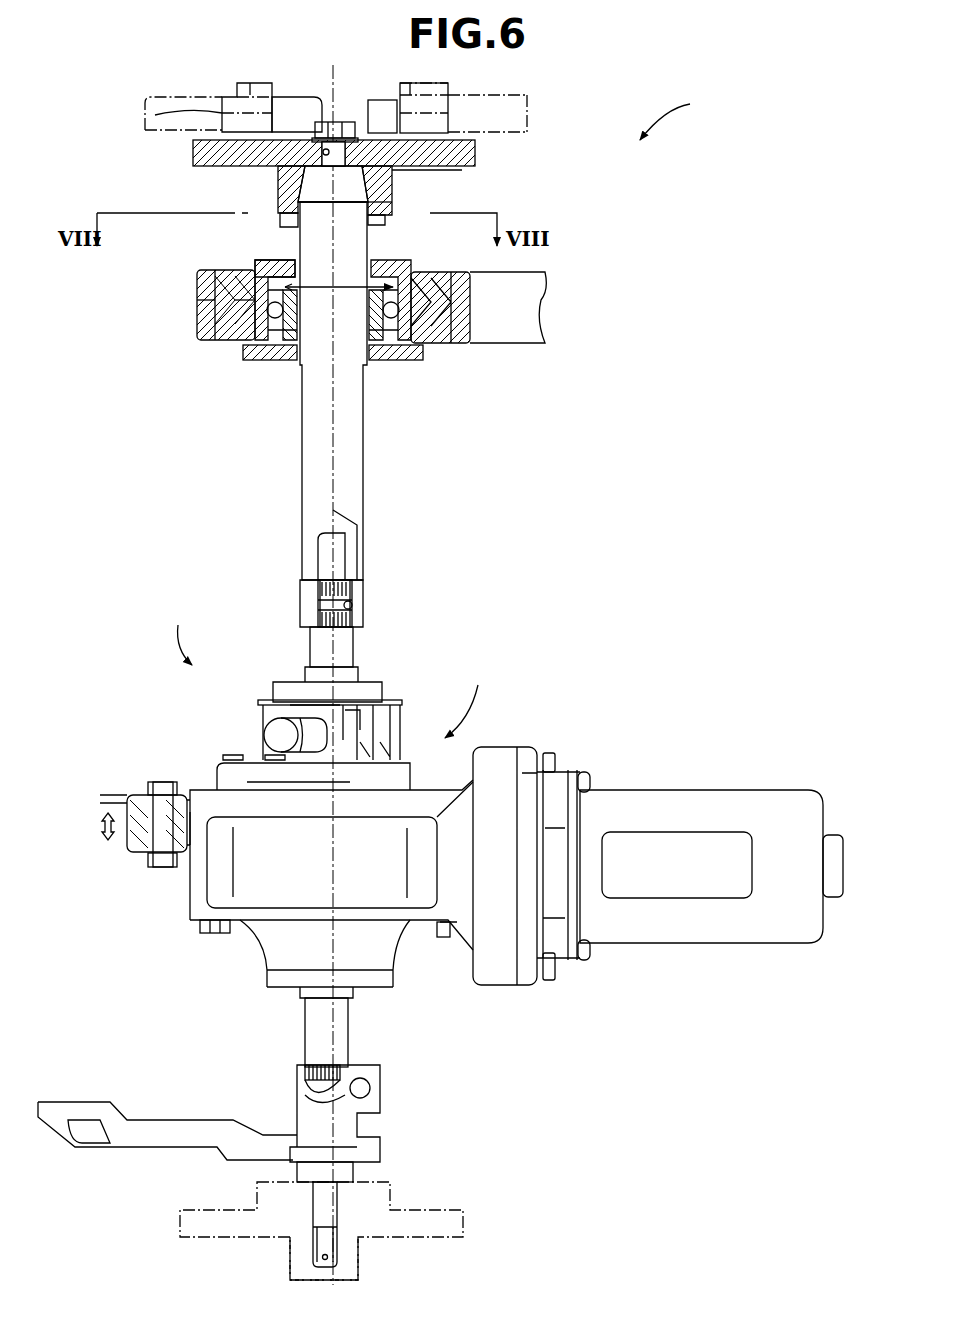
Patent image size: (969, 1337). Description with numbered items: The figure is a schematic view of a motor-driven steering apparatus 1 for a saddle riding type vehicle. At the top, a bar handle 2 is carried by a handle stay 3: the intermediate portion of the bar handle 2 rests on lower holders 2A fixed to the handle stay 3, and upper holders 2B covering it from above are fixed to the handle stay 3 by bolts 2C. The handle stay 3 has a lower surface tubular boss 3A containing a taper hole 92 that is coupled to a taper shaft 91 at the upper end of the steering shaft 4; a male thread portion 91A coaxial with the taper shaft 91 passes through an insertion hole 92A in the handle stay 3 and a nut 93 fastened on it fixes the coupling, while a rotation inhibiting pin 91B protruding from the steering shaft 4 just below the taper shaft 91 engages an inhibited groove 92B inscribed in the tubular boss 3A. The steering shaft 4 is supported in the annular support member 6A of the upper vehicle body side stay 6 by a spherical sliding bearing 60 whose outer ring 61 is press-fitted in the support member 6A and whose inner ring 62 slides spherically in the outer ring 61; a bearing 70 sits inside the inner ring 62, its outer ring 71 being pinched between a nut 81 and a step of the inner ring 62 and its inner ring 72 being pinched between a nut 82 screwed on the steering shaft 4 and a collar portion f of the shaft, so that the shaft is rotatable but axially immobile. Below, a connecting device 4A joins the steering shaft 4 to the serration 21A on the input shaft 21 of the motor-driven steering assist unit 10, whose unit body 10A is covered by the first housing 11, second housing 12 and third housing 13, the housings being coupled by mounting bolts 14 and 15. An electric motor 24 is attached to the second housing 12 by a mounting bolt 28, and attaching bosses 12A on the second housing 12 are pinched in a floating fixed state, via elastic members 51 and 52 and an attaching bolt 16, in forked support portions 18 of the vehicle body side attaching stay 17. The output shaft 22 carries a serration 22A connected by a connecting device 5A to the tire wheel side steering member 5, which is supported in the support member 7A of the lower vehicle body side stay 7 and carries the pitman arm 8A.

The motor-driven steering apparatus 1 is at (674, 116).
The bar handle 2 is at (508, 98).
The lower holder 2A is at (153, 116).
The upper holder 2B is at (222, 95).
The bolt 2C is at (233, 82).
The handle stay 3 is at (473, 153).
The lower surface tubular boss 3A is at (392, 183).
The steering shaft 4 is at (298, 440).
The connecting device 4A is at (300, 592).
The tire wheel side steering member 5 is at (317, 1202).
The connecting device 5A is at (297, 1108).
The upper vehicle body side stay 6 is at (527, 328).
The support member 6A is at (200, 287).
The lower vehicle body side stay 7 is at (463, 1213).
The support member 7A is at (358, 1263).
The pitman arm 8A is at (135, 1140).
The motor-driven steering assist unit 10 is at (173, 632).
The unit body 10A is at (476, 698).
The first housing 11 is at (262, 733).
The second housing 12 is at (190, 888).
The attaching boss 12A is at (137, 818).
The third housing 13 is at (270, 958).
The mounting bolt 14 is at (230, 757).
The mounting bolt 15 is at (197, 930).
The attaching bolt 16 is at (160, 784).
The vehicle body side attaching stay 17 is at (103, 795).
The forked support portion 18 is at (130, 845).
The input shaft 21 is at (315, 647).
The serration 21A is at (352, 585).
The output shaft 22 is at (310, 1025).
The serration 22A is at (297, 1068).
The electric motor 24 is at (770, 797).
The mounting bolt 28 is at (547, 980).
The elastic member 51 is at (190, 812).
The elastic member 52 is at (187, 837).
The spherical sliding bearing 60 is at (247, 272).
The outer ring 61 is at (197, 335).
The inner ring 62 is at (240, 337).
The bearing 70 is at (210, 312).
The outer ring 71 is at (440, 325).
The inner ring 72 is at (385, 357).
The nut 81 is at (273, 262).
The nut 82 is at (243, 352).
The taper shaft 91 is at (393, 170).
The male thread portion 91A is at (325, 115).
The rotation inhibiting pin 91B is at (375, 222).
The taper hole 92 is at (311, 190).
The insertion hole 92A is at (278, 166).
The inhibited groove 92B is at (385, 215).
The nut 93 is at (357, 128).
The collar portion f is at (468, 293).